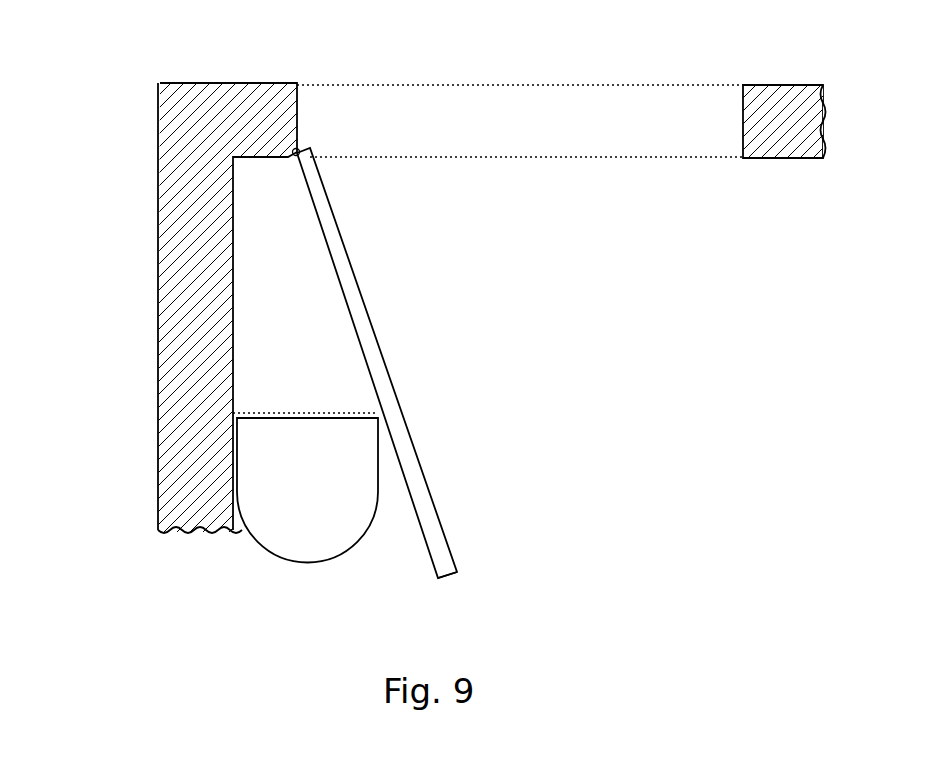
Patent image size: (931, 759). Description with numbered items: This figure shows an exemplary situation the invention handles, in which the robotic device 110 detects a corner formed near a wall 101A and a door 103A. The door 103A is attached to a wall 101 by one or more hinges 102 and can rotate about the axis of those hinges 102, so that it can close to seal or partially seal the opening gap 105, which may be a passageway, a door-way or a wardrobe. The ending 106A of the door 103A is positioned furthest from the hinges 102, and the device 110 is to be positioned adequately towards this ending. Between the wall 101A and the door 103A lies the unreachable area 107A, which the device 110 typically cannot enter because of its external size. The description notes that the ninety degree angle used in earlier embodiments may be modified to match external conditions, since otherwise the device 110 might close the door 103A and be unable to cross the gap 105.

The wall 101A is at (180, 110).
The unreachable area 107A is at (262, 204).
The hinge 102 is at (297, 152).
The opening gap 105 is at (490, 118).
The wall 101 is at (782, 118).
The door 103A is at (405, 448).
The ending of door 106A is at (562, 595).
The device 110 is at (281, 518).